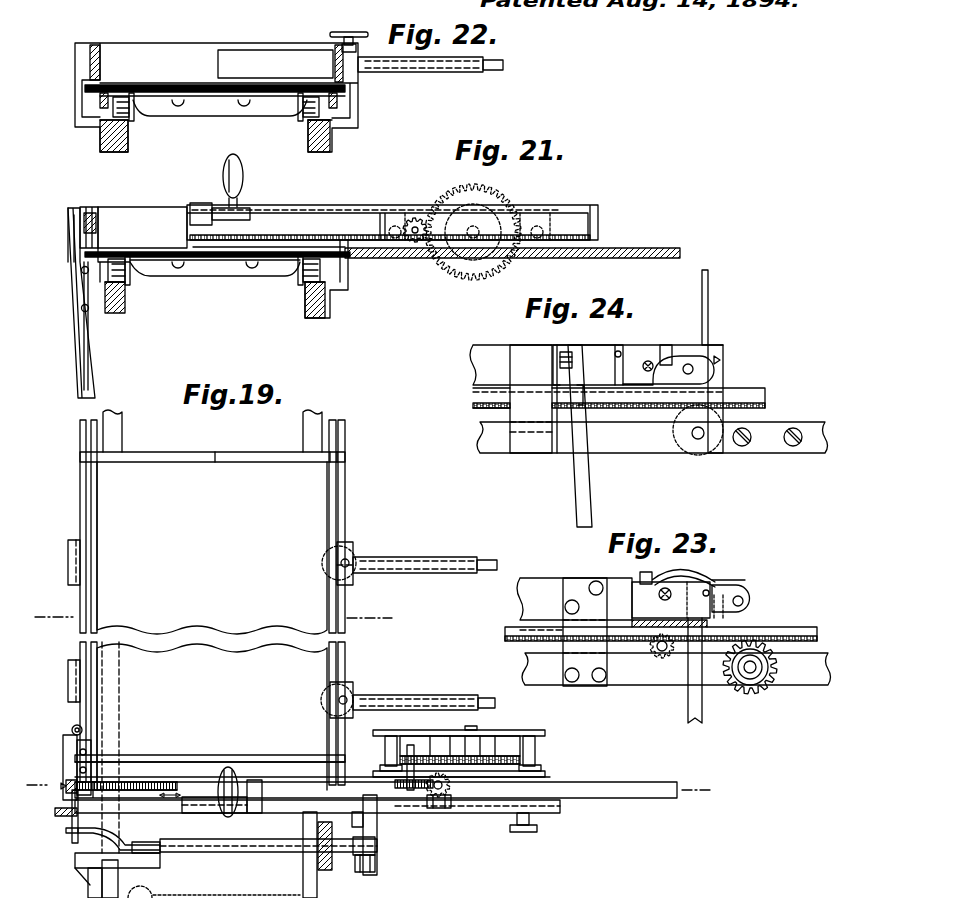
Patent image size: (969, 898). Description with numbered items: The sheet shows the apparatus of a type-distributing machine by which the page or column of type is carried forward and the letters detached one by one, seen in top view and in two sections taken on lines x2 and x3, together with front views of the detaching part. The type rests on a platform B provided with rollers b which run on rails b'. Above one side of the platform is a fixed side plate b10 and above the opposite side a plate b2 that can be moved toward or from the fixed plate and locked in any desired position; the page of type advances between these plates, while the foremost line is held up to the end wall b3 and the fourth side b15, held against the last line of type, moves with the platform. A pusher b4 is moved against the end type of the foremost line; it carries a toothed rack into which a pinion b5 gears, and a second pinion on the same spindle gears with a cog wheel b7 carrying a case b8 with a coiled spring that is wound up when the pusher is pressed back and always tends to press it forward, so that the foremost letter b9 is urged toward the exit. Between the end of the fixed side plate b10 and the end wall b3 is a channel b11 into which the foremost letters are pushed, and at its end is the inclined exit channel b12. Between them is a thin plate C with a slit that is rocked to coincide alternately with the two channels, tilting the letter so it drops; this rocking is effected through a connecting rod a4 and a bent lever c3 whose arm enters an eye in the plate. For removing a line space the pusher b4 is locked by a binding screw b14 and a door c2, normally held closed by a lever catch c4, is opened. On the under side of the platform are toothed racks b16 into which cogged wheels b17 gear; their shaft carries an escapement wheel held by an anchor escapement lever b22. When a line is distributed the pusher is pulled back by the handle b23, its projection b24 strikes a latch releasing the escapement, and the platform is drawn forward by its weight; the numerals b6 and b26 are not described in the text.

In FIG. 22, the platform B is at (172, 88).
In FIG. 21, the platform B is at (382, 262).
In FIG. 19, the platform B is at (206, 605).
In FIG. 22, the rollers b is at (216, 112).
In FIG. 21, the rollers b is at (214, 270).
In FIG. 23, the rollers b is at (662, 660).
In FIG. 22, the rails b' is at (215, 138).
In FIG. 21, the rails b' is at (215, 296).
In FIG. 24, the rails b' is at (649, 400).
In FIG. 23, the rails b' is at (676, 669).
In FIG. 19, the rails b' is at (212, 431).
In FIG. 22, the movable side plate b2 is at (345, 66).
In FIG. 21, the movable side plate b2 is at (446, 226).
In FIG. 19, the movable side plate b2 is at (333, 600).
In FIG. 19, the end wall b3 is at (165, 794).
In FIG. 21, the pusher b4 is at (190, 218).
In FIG. 19, the pusher b4 is at (285, 789).
In FIG. 21, the pinion b5 is at (415, 216).
In FIG. 19, the pinion b5 is at (412, 795).
In FIG. 19, the ratchet wheel b6 is at (460, 749).
In FIG. 21, the cog wheel b7 is at (503, 199).
In FIG. 19, the cog wheel b7 is at (462, 762).
In FIG. 19, the spring case b8 is at (482, 740).
In FIG. 19, the foremost letter b9 is at (72, 790).
In FIG. 22, the fixed side plate b10 is at (109, 62).
In FIG. 23, the fixed side plate b10 is at (574, 632).
In FIG. 19, the fixed side plate b10 is at (88, 684).
In FIG. 21, the channel b11 is at (100, 216).
In FIG. 19, the channel b11 is at (99, 784).
In FIG. 21, the exit channel b12 is at (78, 207).
In FIG. 24, the exit channel b12 is at (582, 497).
In FIG. 23, the exit channel b12 is at (700, 713).
In FIG. 19, the exit channel b12 is at (74, 782).
In FIG. 19, the binding screw b14 is at (452, 800).
In FIG. 19, the fourth side b15 is at (252, 462).
In FIG. 22, the toothed racks b16 is at (97, 100).
In FIG. 24, the toothed racks b16 is at (753, 402).
In FIG. 23, the toothed racks b16 is at (795, 633).
In FIG. 23, the cogged wheels b17 is at (777, 670).
In FIG. 19, the cogged wheels b17 is at (317, 863).
In FIG. 19, the anchor escapement lever b22 is at (362, 862).
In FIG. 21, the handle b23 is at (230, 173).
In FIG. 19, the handle b23 is at (230, 770).
In FIG. 21, the projection b24 is at (243, 215).
In FIG. 19, the projection b24 is at (233, 808).
In FIG. 21, the connecting rod b26 is at (73, 297).
In FIG. 21, the plate C is at (72, 218).
In FIG. 24, the plate C is at (648, 354).
In FIG. 23, the plate C is at (750, 592).
In FIG. 19, the plate C is at (73, 841).
In FIG. 24, the door c2 is at (572, 354).
In FIG. 23, the door c2 is at (671, 604).
In FIG. 19, the door c2 is at (72, 727).
In FIG. 19, the second bent lever c3 is at (113, 838).
In FIG. 23, the lever catch c4 is at (700, 583).
In FIG. 19, the lever catch c4 is at (72, 815).
In FIG. 19, the connecting rod a4 is at (214, 887).
In FIG. 19, the section line x2 is at (213, 606).
In FIG. 19, the section line x3 is at (369, 775).